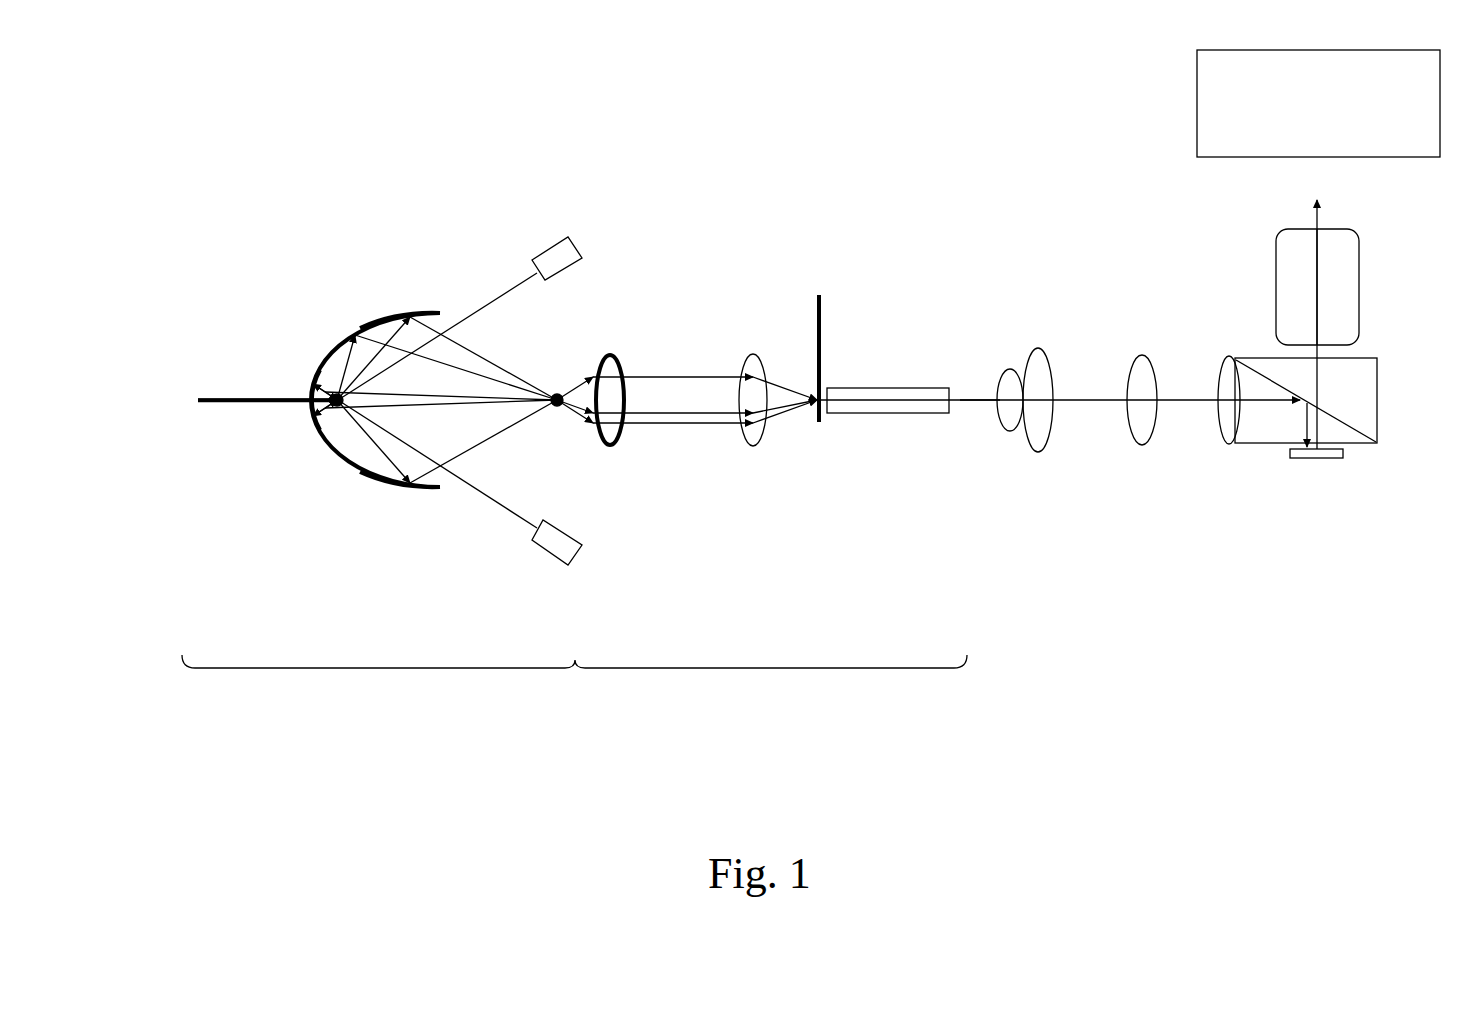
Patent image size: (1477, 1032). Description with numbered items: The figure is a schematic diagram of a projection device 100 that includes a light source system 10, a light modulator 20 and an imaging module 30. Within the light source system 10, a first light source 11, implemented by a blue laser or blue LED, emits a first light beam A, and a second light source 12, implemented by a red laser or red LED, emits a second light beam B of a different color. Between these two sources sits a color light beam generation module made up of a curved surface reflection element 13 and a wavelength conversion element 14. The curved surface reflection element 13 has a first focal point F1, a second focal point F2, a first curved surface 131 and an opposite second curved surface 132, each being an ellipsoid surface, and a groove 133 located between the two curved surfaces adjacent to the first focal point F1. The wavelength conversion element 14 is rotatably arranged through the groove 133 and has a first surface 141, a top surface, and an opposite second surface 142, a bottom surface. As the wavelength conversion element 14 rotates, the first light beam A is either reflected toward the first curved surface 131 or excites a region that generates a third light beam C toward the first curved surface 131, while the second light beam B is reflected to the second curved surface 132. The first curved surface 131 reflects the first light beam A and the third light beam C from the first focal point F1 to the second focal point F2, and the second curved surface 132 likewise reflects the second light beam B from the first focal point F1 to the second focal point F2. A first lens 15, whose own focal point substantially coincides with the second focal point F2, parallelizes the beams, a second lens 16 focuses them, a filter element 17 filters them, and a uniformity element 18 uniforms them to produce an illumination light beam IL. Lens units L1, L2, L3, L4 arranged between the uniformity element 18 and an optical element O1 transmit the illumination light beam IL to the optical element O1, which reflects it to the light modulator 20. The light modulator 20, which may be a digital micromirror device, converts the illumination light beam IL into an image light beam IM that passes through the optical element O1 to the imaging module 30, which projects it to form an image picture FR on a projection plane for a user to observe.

The projection device 100 is at (163, 96).
The light source system 10 is at (574, 684).
The first light source 11 is at (552, 258).
The second light source 12 is at (555, 548).
The curved surface reflection element 13 is at (389, 524).
The first curved surface 131 is at (363, 325).
The second curved surface 132 is at (354, 466).
The groove 133 is at (308, 412).
The wavelength conversion element 14 is at (190, 409).
The first surface 141 is at (213, 397).
The second surface 142 is at (232, 402).
The first lens 15 is at (610, 450).
The second lens 16 is at (752, 450).
The filter element 17 is at (816, 430).
The uniformity element 18 is at (912, 415).
The light modulator 20 is at (1316, 460).
The imaging module 30 is at (1360, 296).
The first light beam A is at (483, 305).
The second light beam B is at (480, 492).
The third light beam C is at (343, 353).
The first focal point F1 is at (345, 403).
The second focal point F2 is at (556, 408).
The illumination light beam IL is at (970, 396).
The lens unit L1 is at (1010, 432).
The lens unit L2 is at (1038, 453).
The lens unit L3 is at (1142, 446).
The lens unit L4 is at (1228, 445).
The optical element O1 is at (1380, 378).
The image light beam IM is at (1318, 262).
The image picture FR is at (1318, 103).